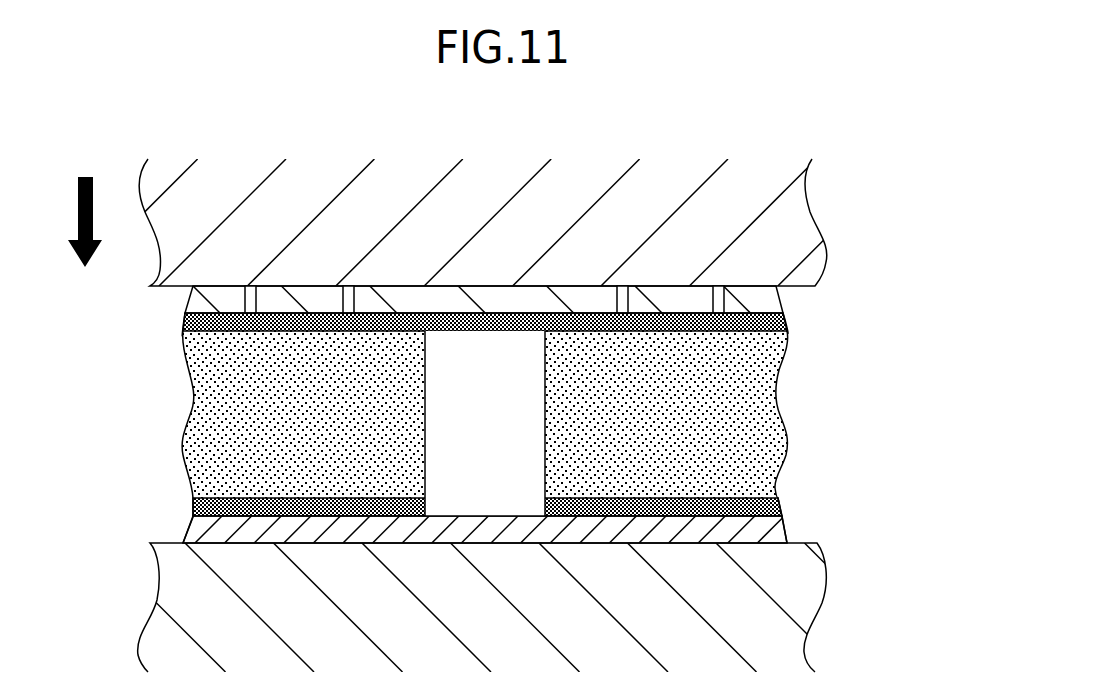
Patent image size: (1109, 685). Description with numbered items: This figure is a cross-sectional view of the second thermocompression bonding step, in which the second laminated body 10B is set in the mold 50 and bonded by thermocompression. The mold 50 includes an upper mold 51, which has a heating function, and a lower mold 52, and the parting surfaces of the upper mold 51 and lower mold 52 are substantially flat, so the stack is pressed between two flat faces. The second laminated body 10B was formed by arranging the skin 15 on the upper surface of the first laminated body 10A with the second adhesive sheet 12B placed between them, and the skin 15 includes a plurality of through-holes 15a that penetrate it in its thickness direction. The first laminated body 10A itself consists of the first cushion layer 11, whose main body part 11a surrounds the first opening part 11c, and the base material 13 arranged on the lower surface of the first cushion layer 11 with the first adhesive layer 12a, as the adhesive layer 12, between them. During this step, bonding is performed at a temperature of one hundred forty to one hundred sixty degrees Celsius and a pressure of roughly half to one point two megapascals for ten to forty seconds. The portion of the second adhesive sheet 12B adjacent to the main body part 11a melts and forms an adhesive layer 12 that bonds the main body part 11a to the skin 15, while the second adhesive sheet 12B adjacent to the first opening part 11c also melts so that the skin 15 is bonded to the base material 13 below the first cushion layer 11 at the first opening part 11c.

The mold 50 is at (823, 172).
The upper mold 51 is at (778, 198).
The lower mold 52 is at (778, 638).
The second laminated body 10B is at (495, 280).
The first laminated body 10A is at (884, 438).
The skin 15 is at (790, 293).
The through-holes 15a is at (250, 300).
The adhesive layer 12 is at (561, 401).
The second adhesive sheet 12B is at (797, 323).
The first adhesive layer 12a is at (791, 506).
The first cushion layer 11 is at (795, 440).
The main body part 11a is at (647, 410).
The first opening part 11c is at (440, 425).
The base material 13 is at (802, 529).